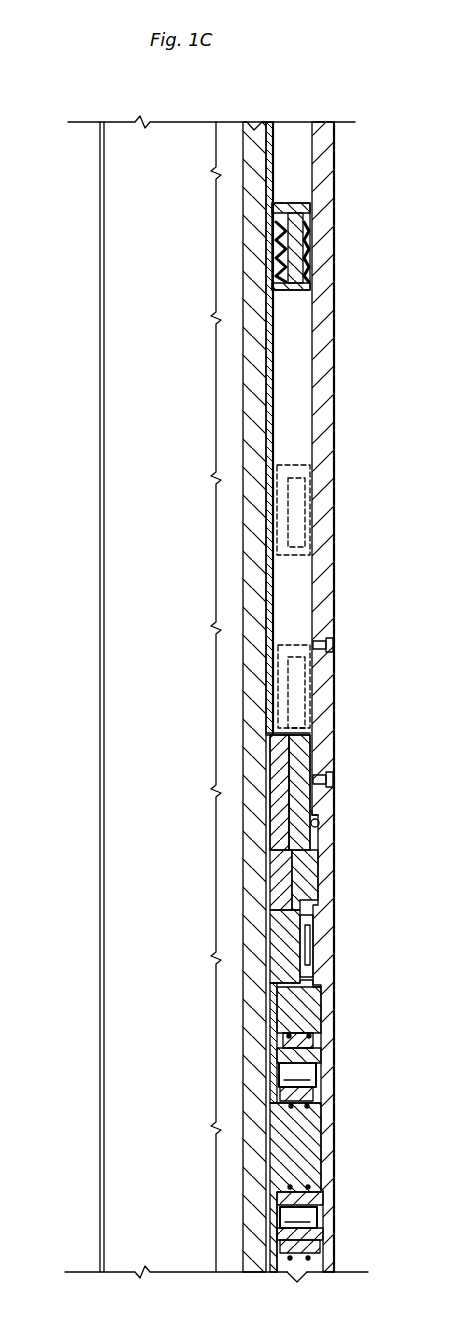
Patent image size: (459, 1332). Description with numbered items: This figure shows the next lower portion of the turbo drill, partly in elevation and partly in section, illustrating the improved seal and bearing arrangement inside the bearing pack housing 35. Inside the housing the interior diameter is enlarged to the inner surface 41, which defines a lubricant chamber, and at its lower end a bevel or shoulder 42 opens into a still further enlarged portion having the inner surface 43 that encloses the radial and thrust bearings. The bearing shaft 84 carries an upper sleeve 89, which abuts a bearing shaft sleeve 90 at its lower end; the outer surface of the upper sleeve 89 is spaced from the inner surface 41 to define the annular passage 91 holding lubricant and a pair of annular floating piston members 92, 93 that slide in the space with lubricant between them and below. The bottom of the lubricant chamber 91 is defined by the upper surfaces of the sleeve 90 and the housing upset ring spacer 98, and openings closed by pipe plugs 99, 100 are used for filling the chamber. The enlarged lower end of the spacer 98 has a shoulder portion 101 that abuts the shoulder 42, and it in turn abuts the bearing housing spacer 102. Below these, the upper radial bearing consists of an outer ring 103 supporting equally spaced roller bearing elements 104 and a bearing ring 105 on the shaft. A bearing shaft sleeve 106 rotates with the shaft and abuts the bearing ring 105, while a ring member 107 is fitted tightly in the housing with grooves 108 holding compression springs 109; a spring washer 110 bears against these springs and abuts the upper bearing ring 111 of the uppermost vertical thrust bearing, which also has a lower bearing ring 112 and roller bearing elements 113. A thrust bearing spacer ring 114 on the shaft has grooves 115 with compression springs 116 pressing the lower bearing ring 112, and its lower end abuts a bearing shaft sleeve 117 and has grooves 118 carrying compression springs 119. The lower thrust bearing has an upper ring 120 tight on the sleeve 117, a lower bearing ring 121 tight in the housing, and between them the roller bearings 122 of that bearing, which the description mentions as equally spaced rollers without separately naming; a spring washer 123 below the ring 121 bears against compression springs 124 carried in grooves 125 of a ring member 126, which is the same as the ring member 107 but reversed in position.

The bearing pack housing 35 is at (330, 567).
The inner surface defining lubricant chamber 41 is at (307, 595).
The bevel or shoulder 42 is at (340, 807).
The inner surface enclosing bearings 43 is at (318, 1010).
The bearing shaft 84 is at (248, 553).
The upper sleeve 89 is at (268, 348).
The bearing shaft sleeve 90 is at (270, 810).
The annular passage / lubricant chamber 91 is at (296, 392).
The floating piston member 92 is at (308, 503).
The floating piston member 93 is at (305, 248).
The housing upset ring spacer 98 is at (300, 748).
The pipe plug 99 is at (335, 645).
The pipe plug 100 is at (335, 778).
The shoulder portion 101 is at (320, 826).
The bearing housing spacer 102 is at (318, 860).
The outer ring 103 is at (318, 928).
The roller bearing elements 104 is at (312, 945).
The bearing ring 105 is at (280, 928).
The bearing shaft sleeve 106 is at (273, 1007).
The ring member 107 is at (320, 985).
The grooves 108 is at (330, 1035).
The compression springs 109 is at (289, 1027).
The spring washer 110 is at (290, 1050).
The upper bearing ring 111 is at (290, 1065).
The lower bearing ring 112 is at (320, 1093).
The roller bearing elements 113 is at (320, 1070).
The thrust bearing spacer ring 114 is at (310, 1140).
The grooves 115 is at (312, 1113).
The compression springs 116 is at (290, 1112).
The bearing shaft sleeve 117 is at (275, 1220).
The grooves 118 is at (308, 1182).
The compression springs 119 is at (290, 1184).
The upper ring 120 is at (320, 1197).
The lower bearing ring 121 is at (325, 1232).
The spacer 122 is at (305, 1217).
The spring washer 123 is at (285, 1245).
The compression springs 124 is at (290, 1257).
The grooves 125 is at (312, 1258).
The ring member 126 is at (305, 1275).